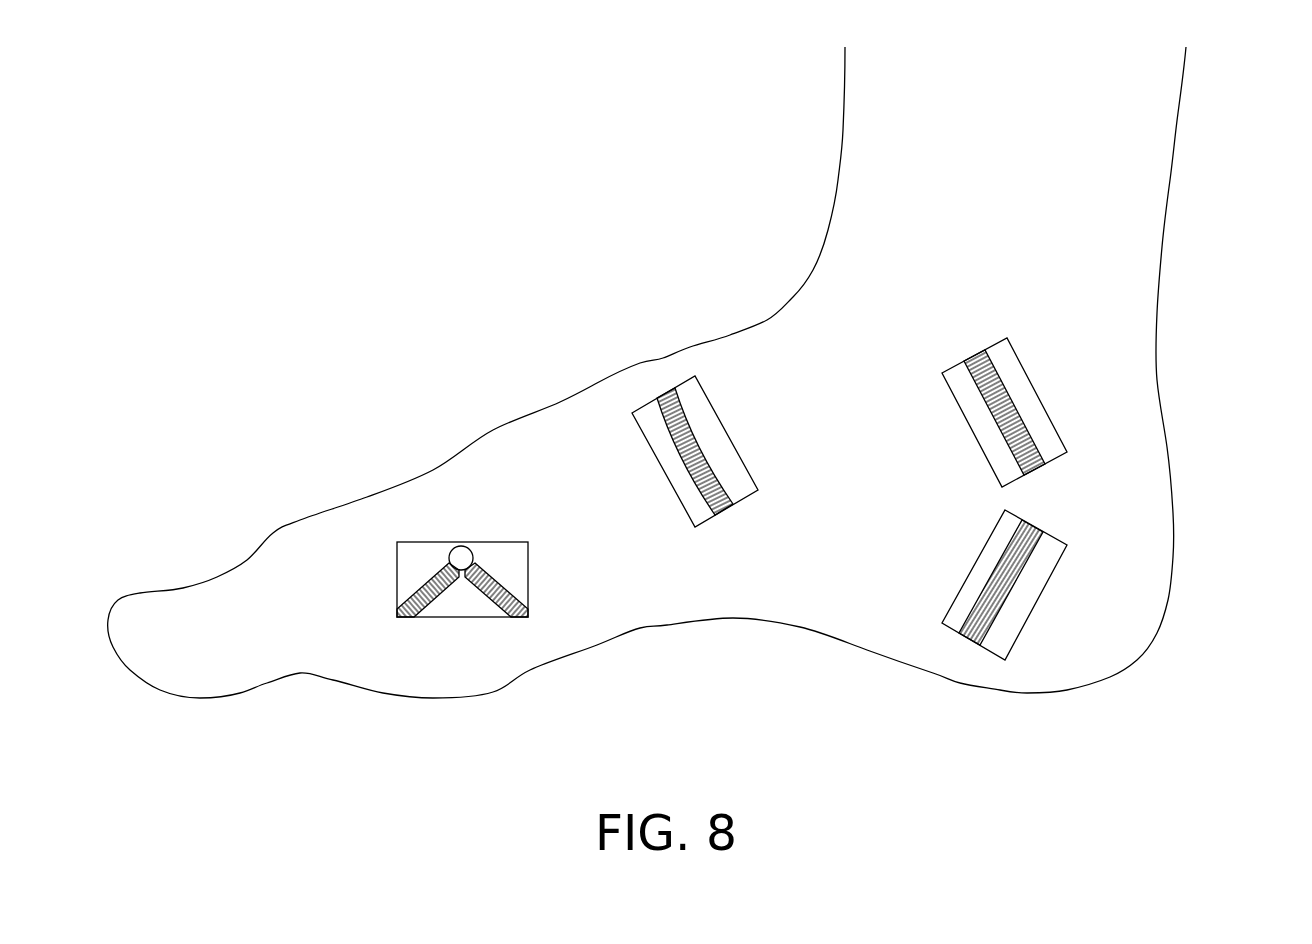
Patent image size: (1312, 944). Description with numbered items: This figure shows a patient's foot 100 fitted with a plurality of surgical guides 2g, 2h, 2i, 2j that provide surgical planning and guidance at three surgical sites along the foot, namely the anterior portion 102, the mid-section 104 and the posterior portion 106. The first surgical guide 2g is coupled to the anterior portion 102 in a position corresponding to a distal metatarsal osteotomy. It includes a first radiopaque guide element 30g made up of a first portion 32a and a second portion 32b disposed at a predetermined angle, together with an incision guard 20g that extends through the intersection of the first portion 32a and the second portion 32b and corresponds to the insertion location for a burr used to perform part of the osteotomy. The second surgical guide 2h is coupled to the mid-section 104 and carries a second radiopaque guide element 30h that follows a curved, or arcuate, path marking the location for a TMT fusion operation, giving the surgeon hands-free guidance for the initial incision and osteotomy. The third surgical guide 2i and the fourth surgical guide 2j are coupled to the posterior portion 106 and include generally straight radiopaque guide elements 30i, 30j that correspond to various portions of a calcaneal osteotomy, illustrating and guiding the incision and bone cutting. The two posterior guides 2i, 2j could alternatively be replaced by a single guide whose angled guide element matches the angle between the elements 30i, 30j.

The patient's foot 100 is at (668, 185).
The anterior portion 102 is at (355, 487).
The mid-section 104 is at (657, 343).
The posterior portion 106 is at (1185, 463).
The first surgical guide 2g is at (507, 590).
The second surgical guide 2h is at (667, 410).
The third surgical guide 2i is at (1031, 632).
The fourth surgical guide 2j is at (1082, 392).
The incision guard 20g is at (461, 545).
The first radiopaque guide element 30g is at (507, 666).
The second radiopaque guide element 30h is at (690, 447).
The radiopaque guide element 30i is at (989, 583).
The radiopaque guide element 30j is at (1023, 370).
The first portion 32a is at (423, 607).
The second portion 32b is at (503, 577).